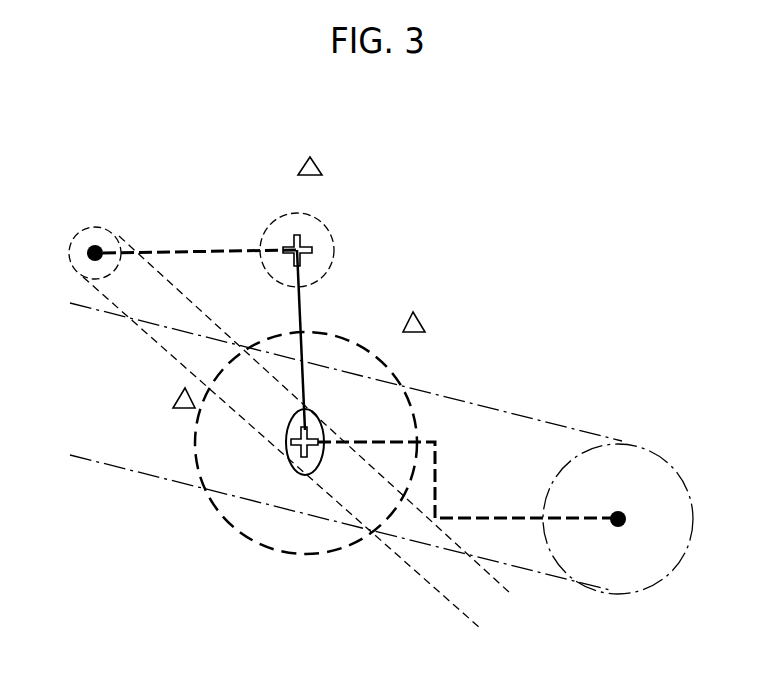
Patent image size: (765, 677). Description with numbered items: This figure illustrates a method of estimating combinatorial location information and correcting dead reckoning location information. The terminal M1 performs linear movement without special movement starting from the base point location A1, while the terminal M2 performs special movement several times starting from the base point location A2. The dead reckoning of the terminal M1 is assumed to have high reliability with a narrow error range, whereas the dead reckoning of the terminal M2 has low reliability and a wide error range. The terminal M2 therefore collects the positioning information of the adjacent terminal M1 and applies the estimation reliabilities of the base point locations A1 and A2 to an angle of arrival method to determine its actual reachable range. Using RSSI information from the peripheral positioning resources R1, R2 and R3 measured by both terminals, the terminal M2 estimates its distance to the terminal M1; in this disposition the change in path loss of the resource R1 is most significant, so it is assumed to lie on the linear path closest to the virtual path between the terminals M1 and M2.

The base point location A1 is at (167, 250).
The base point location A2 is at (618, 519).
The terminal M1 is at (316, 321).
The terminal M2 is at (403, 443).
The peripheral positioning resource R1 is at (313, 151).
The peripheral positioning resource R2 is at (428, 326).
The peripheral positioning resource R3 is at (168, 404).